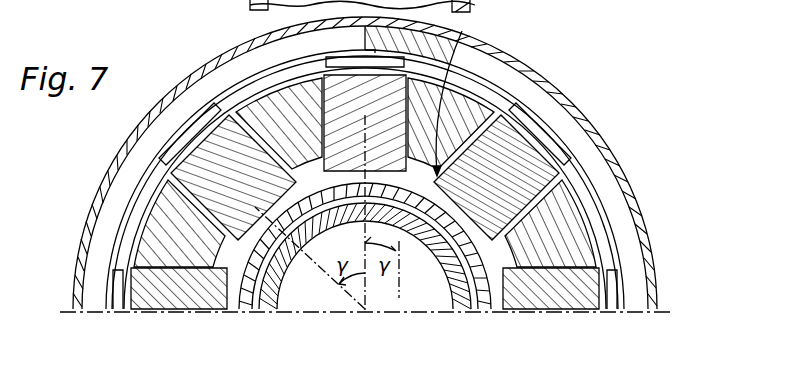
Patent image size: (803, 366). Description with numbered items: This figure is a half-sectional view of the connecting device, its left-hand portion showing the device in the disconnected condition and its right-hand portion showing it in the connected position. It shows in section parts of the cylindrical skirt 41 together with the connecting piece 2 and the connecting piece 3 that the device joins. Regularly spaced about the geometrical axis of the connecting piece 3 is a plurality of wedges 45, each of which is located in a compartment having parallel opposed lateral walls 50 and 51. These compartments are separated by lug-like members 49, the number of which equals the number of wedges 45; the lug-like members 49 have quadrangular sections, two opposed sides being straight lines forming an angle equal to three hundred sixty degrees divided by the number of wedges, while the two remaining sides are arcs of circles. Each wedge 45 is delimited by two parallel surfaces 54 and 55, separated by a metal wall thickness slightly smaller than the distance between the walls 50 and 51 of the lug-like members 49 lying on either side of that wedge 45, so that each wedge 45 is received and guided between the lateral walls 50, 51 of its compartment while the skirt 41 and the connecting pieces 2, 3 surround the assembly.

The cylindrical skirt 41 is at (118, 157).
The parallel surface 54 is at (457, 123).
The lug-like member 49 is at (513, 104).
The lateral opposed parallel wall 50 is at (527, 127).
The lateral opposed parallel wall 51 is at (520, 160).
The wedge 45 is at (510, 210).
The parallel surface 55 is at (497, 243).
The connecting piece 2 is at (271, 298).
The connecting piece 3 is at (240, 296).